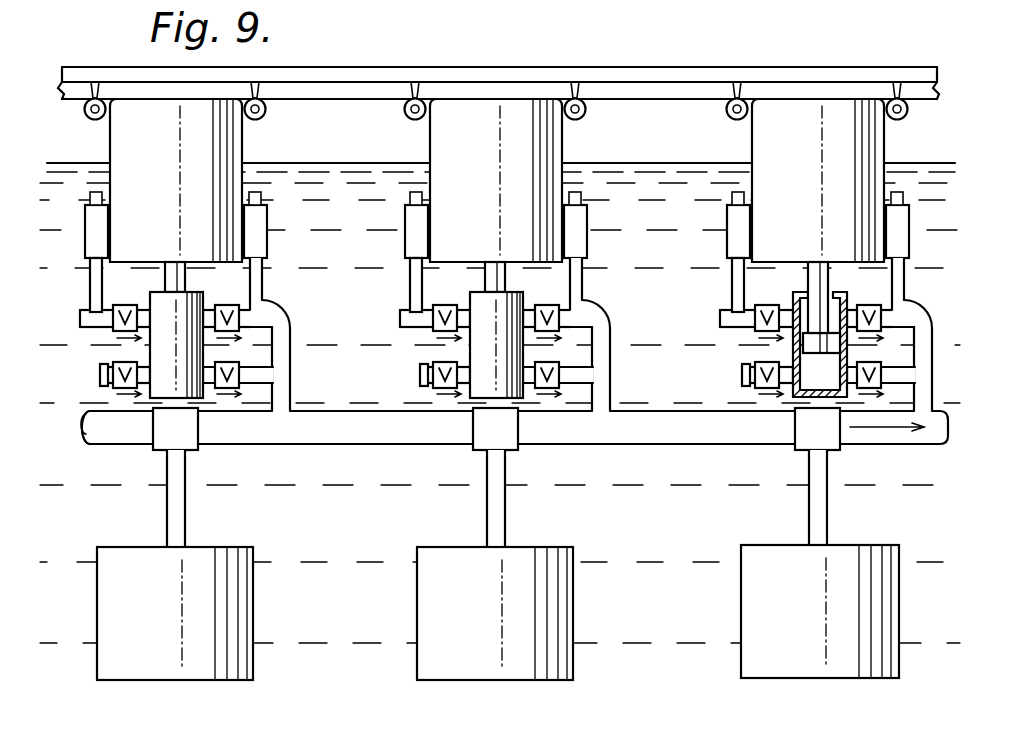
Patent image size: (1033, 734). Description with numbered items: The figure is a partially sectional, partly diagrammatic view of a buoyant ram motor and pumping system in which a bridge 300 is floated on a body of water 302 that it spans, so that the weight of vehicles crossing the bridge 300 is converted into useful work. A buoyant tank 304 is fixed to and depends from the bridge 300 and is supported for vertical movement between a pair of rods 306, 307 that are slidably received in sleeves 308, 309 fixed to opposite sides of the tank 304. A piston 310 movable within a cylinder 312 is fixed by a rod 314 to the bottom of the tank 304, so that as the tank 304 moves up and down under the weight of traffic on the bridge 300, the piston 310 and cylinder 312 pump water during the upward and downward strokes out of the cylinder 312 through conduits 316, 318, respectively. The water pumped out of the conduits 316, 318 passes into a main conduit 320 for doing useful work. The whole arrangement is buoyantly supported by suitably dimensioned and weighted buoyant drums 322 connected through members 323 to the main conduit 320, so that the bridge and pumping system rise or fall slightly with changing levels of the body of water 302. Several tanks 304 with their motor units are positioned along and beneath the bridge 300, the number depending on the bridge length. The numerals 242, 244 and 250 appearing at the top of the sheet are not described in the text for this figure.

The drive member 242 is at (421, 15).
The cable 244 is at (654, 16).
The pulley 250 is at (726, 16).
The bridge 300 is at (525, 72).
The body of water 302 is at (342, 163).
The buoyant tank 304 is at (127, 144).
The rod 306 is at (94, 277).
The rod 307 is at (262, 283).
The sleeve 308 is at (97, 217).
The sleeve 309 is at (253, 217).
The piston 310 is at (772, 344).
The cylinder 312 is at (160, 353).
The rod 314 is at (175, 277).
The conduit 316 is at (287, 323).
The conduit 318 is at (253, 365).
The main conduit 320 is at (693, 435).
The buoyant drum 322 is at (110, 595).
The member 323 is at (177, 513).